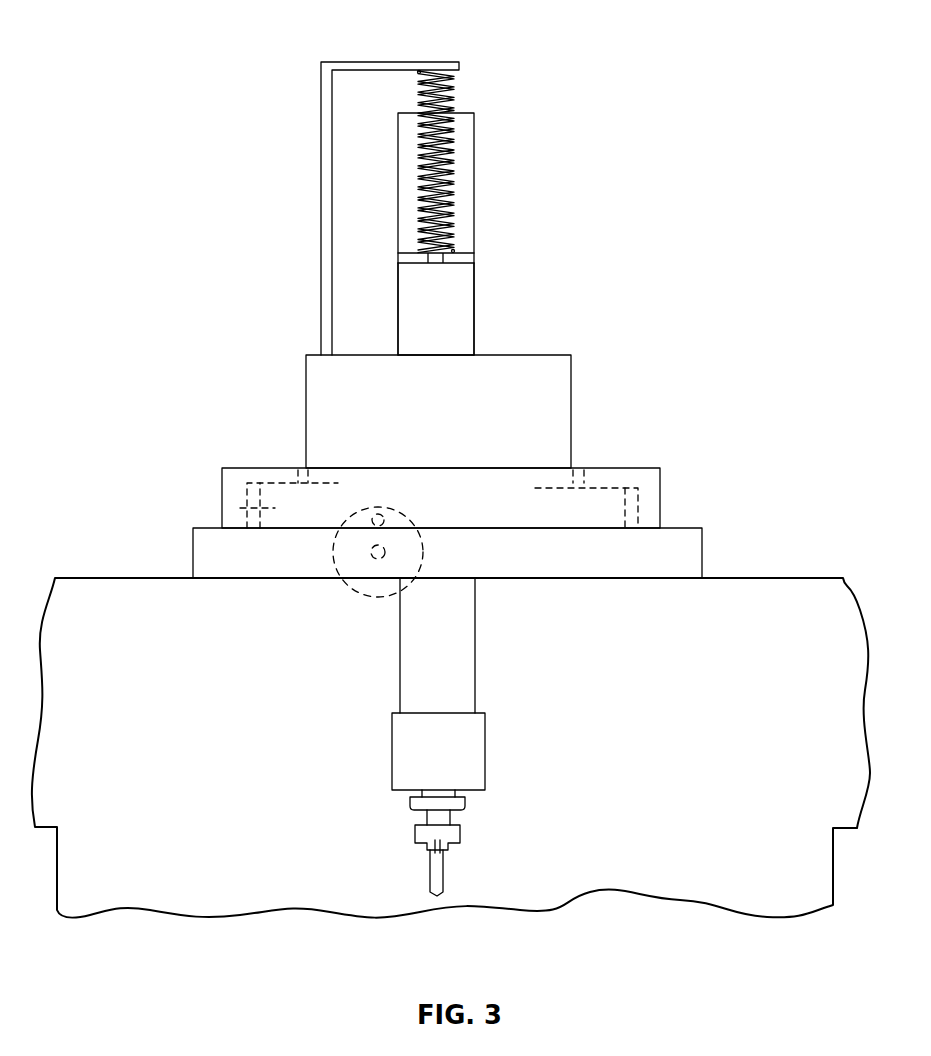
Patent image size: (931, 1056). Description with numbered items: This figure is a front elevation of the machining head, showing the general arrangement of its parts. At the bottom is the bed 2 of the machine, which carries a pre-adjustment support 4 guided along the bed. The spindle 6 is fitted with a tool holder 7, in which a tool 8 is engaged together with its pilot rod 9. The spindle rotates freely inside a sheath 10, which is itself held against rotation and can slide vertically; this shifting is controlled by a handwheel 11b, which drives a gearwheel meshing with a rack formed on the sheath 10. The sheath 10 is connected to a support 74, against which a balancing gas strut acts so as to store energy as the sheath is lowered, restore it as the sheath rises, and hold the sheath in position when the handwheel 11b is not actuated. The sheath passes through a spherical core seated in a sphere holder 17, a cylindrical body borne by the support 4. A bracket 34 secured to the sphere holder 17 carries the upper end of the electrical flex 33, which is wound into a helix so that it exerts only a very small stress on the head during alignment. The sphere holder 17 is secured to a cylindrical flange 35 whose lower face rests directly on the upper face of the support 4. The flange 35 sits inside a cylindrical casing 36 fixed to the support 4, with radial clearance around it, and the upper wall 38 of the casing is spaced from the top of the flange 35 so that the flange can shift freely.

The bed of the machine 2 is at (153, 590).
The pre-adjustment support 4 is at (687, 558).
The spindle 6 is at (443, 790).
The tool holder 7 is at (430, 805).
The tool 8 is at (457, 837).
The pilot rod 9 is at (440, 872).
The sheath 10 is at (467, 320).
The handwheel 11b is at (425, 558).
The sphere holder 17 is at (558, 408).
The flex 33 is at (452, 172).
The bracket 34 is at (377, 67).
The cylindrical flange 35 is at (240, 508).
The cylindrical casing 36 is at (648, 502).
The upper wall of the casing 38 is at (617, 468).
The support 74 is at (463, 228).